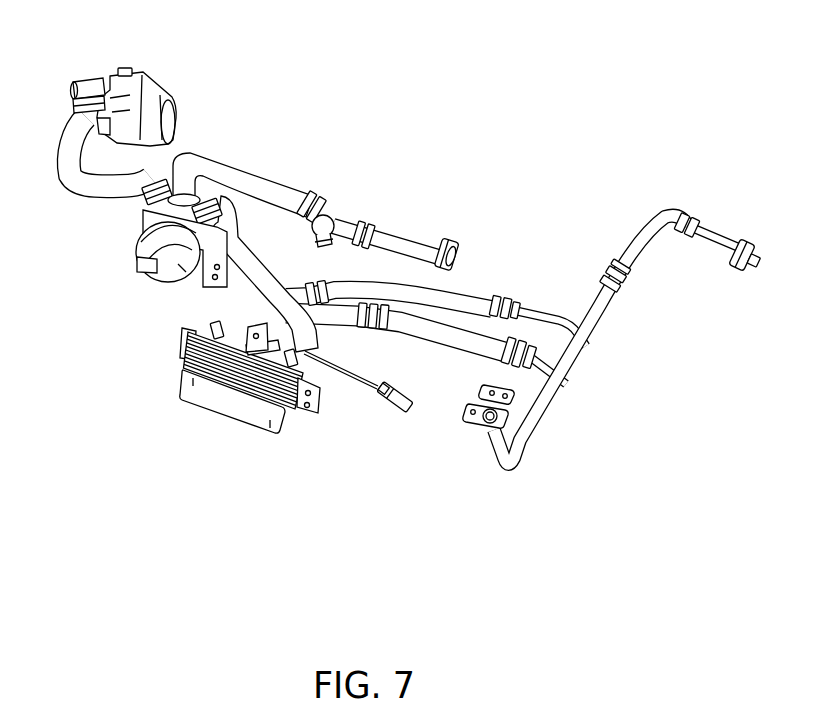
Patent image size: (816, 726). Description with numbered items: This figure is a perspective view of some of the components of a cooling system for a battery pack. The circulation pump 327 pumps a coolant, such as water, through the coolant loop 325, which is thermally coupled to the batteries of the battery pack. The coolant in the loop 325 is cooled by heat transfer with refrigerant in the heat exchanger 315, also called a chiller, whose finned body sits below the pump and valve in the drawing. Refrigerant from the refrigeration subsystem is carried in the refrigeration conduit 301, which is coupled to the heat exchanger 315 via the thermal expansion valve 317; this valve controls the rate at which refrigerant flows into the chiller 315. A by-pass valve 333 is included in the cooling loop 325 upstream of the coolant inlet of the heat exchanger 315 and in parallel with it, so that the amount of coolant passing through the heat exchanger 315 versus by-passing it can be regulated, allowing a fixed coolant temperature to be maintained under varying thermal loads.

The refrigeration conduit 301 is at (593, 320).
The heat exchanger 315 is at (203, 397).
The thermal expansion valve 317 is at (277, 343).
The coolant loop 325 is at (277, 186).
The circulation pump 327 is at (140, 102).
The by-pass valve 333 is at (153, 250).